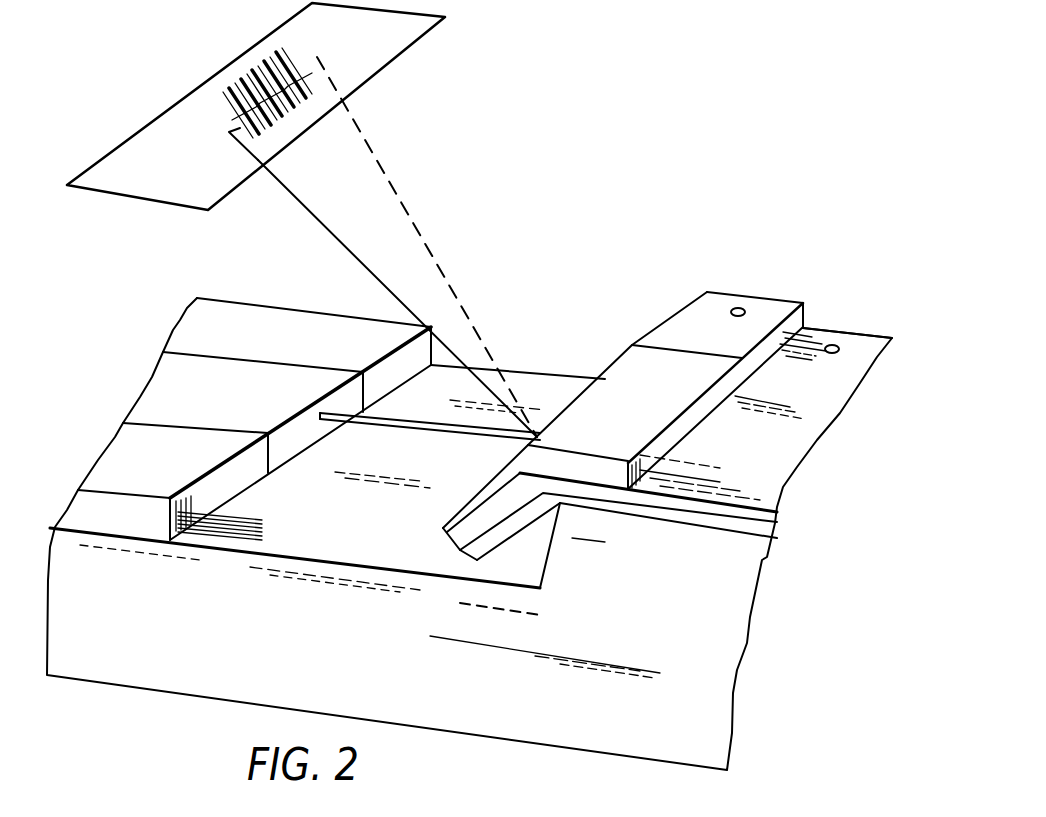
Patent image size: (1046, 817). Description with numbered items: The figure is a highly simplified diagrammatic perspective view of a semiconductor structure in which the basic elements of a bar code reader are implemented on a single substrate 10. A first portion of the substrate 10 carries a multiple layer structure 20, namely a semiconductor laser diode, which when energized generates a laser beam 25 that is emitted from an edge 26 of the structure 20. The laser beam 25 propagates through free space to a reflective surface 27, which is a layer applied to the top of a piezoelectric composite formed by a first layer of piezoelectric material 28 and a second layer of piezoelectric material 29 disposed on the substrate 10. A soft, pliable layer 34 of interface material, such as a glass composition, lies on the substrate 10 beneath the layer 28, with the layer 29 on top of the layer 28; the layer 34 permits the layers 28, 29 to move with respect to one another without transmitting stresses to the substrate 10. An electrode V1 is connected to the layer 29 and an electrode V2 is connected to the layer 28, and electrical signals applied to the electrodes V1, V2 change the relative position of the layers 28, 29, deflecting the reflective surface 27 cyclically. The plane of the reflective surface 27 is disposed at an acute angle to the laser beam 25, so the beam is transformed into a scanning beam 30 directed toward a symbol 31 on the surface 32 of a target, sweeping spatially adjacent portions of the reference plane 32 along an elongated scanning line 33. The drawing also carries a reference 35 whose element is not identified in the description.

The substrate 10 is at (364, 659).
The multiple layer structure 20 is at (271, 492).
The laser beam 25 is at (413, 432).
The edge 26 is at (298, 448).
The reflective surface 27 is at (456, 512).
The first layer of piezoelectric material 28 is at (499, 525).
The second layer of piezoelectric material 29 is at (613, 477).
The scanning beam 30 is at (358, 261).
The symbol 31 is at (223, 100).
The surface of a target 32 is at (425, 32).
The scanning line 33 is at (227, 131).
The layer of interface material 34 is at (774, 535).
The electrode bar 35 is at (700, 268).
The electrode V1 is at (743, 307).
The electrode V2 is at (837, 345).